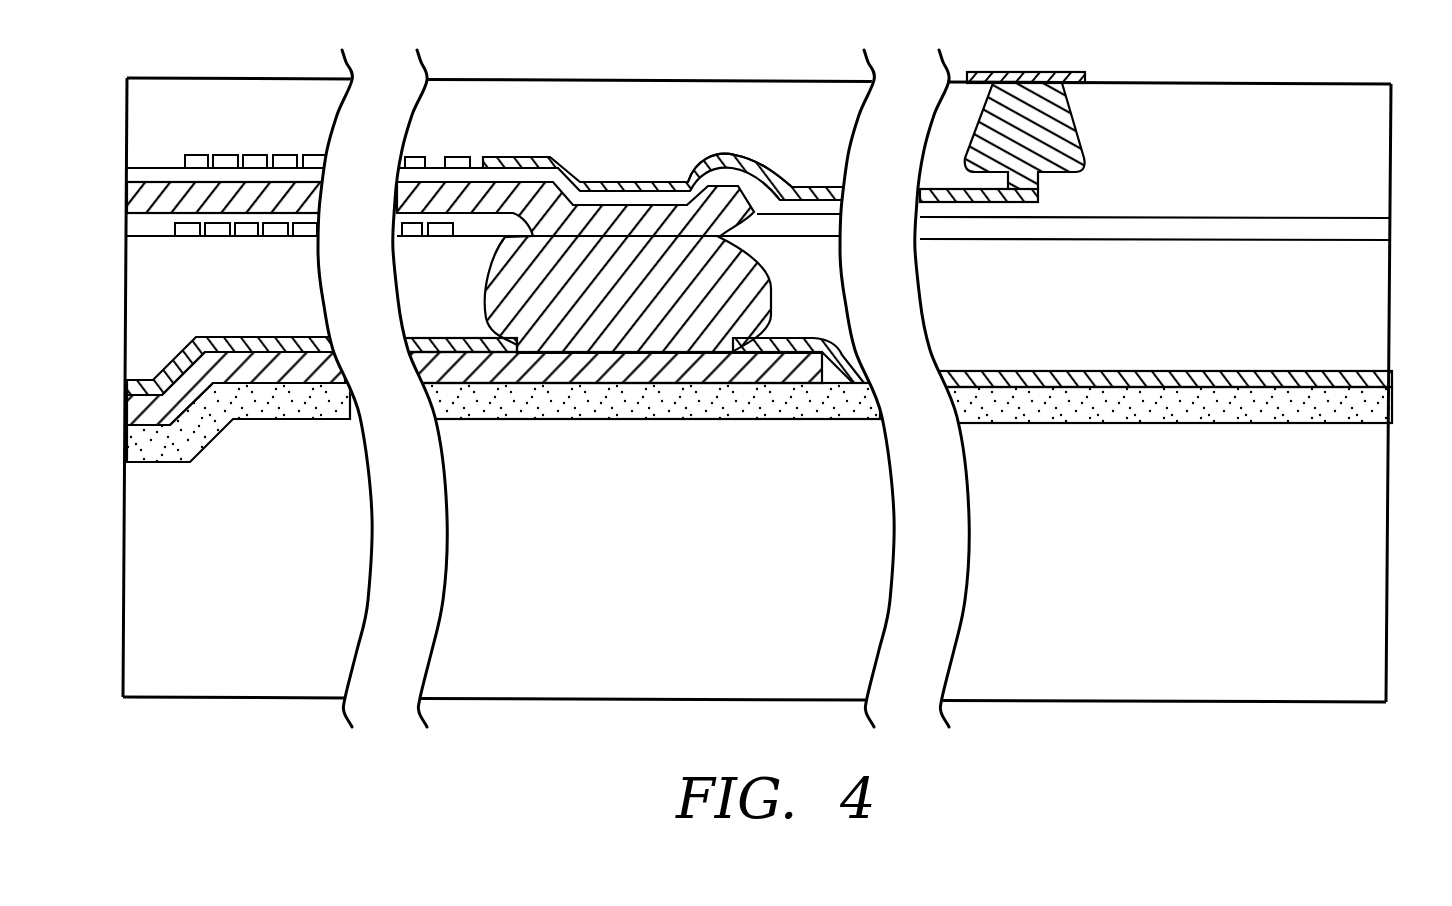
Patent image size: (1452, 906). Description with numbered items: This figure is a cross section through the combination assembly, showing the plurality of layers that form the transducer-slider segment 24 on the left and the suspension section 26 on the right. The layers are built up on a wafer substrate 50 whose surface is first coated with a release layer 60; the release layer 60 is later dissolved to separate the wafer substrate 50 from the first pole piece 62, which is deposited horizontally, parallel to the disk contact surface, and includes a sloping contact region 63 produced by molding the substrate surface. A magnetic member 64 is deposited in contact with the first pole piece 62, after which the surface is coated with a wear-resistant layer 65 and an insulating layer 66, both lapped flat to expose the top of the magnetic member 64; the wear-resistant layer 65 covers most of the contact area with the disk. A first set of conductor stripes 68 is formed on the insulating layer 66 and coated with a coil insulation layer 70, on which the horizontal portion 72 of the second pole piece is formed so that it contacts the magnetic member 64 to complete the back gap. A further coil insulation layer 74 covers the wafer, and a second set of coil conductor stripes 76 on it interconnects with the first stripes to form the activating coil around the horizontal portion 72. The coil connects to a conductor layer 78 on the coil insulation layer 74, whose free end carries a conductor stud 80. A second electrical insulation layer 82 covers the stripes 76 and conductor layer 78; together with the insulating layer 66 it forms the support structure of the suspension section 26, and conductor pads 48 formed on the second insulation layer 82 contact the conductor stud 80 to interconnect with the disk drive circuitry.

The transducer-slider segment 24 is at (461, 52).
The suspension section 26 is at (1212, 69).
The conductor pads 48 is at (1040, 72).
The wafer substrate 50 is at (643, 540).
The release layer 60 is at (131, 440).
The first pole piece 62 is at (131, 410).
The sloping contact region 63 is at (203, 398).
The magnetic member 64 is at (735, 266).
The wear-resistant layer 65 is at (131, 382).
The insulating layer 66 is at (131, 300).
The first set of conductor stripes 68 is at (248, 237).
The coil insulation layer 70 is at (131, 225).
The horizontal portion of second pole piece 72 is at (131, 197).
The coil insulation layer 74 is at (131, 174).
The second set of coil conductor stripes 76 is at (262, 155).
The conductor layer 78 is at (622, 178).
The conductor stud 80 is at (1058, 138).
The second electrical insulation layer 82 is at (131, 117).